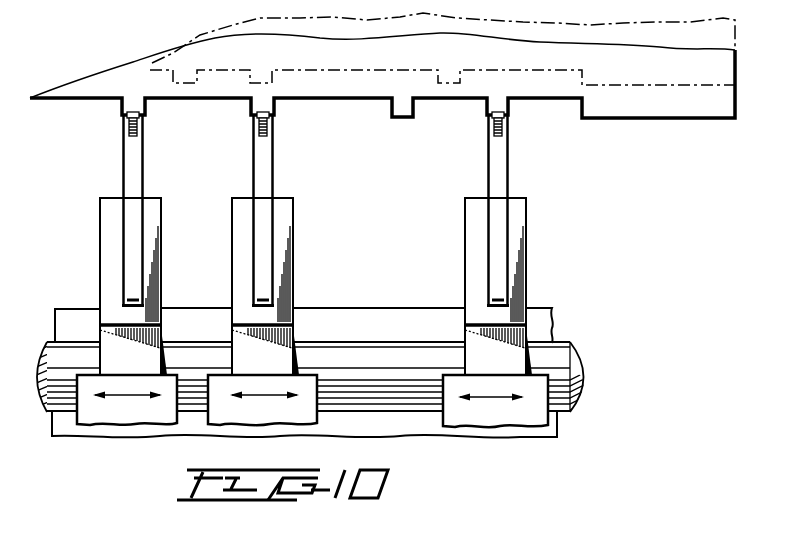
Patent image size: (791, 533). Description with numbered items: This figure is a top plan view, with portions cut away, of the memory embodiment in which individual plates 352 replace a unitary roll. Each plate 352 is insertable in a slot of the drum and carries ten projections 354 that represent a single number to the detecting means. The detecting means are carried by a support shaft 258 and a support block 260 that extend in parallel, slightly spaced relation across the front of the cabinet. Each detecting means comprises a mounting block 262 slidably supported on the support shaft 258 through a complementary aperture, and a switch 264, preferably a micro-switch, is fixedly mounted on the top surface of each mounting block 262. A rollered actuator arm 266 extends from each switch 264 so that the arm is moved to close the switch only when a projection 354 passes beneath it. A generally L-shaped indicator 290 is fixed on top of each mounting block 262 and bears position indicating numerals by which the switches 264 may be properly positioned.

The plate 352 is at (660, 76).
The projection 354 is at (182, 86).
The support shaft 258 is at (571, 343).
The support block 260 is at (73, 308).
The mounting block 262 is at (153, 342).
The switch 264 is at (163, 252).
The actuator arm 266 is at (146, 182).
The indicator 290 is at (222, 378).